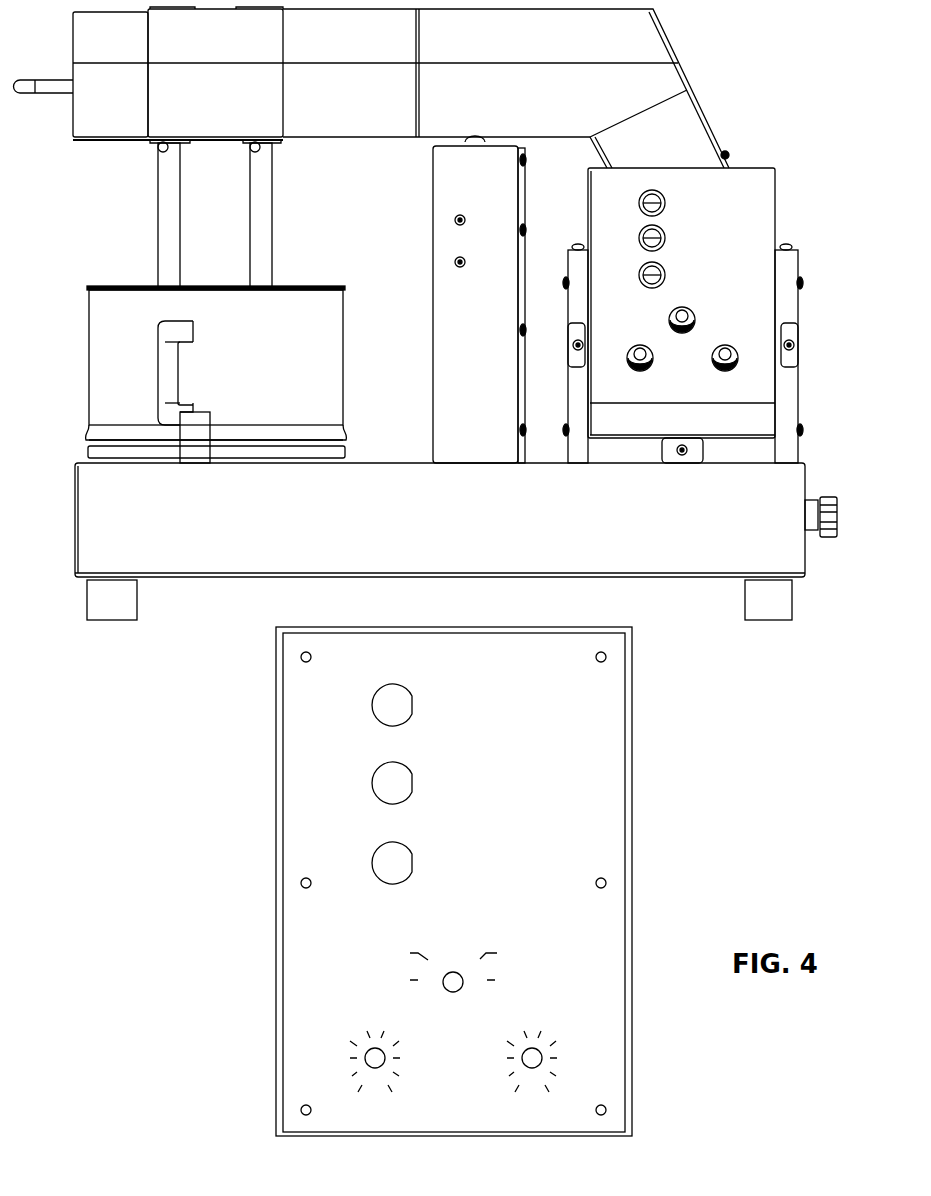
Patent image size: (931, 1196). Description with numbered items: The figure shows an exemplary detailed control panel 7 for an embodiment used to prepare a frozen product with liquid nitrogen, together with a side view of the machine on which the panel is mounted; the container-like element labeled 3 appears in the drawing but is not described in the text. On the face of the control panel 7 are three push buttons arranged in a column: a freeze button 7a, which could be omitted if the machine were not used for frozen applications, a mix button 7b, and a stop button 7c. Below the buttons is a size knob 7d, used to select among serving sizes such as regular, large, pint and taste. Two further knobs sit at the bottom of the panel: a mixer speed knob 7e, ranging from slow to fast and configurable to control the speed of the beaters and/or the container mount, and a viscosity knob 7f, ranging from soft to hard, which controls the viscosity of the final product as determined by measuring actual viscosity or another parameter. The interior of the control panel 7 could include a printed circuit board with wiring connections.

The mixing bowl 3 is at (88, 383).
The control panel 7 is at (758, 168).
The freeze button 7a is at (372, 706).
The mix button 7b is at (372, 773).
The stop button 7c is at (372, 861).
The size knob 7d is at (448, 978).
The mixer speed knob 7e is at (366, 1052).
The viscosity knob 7f is at (542, 1055).